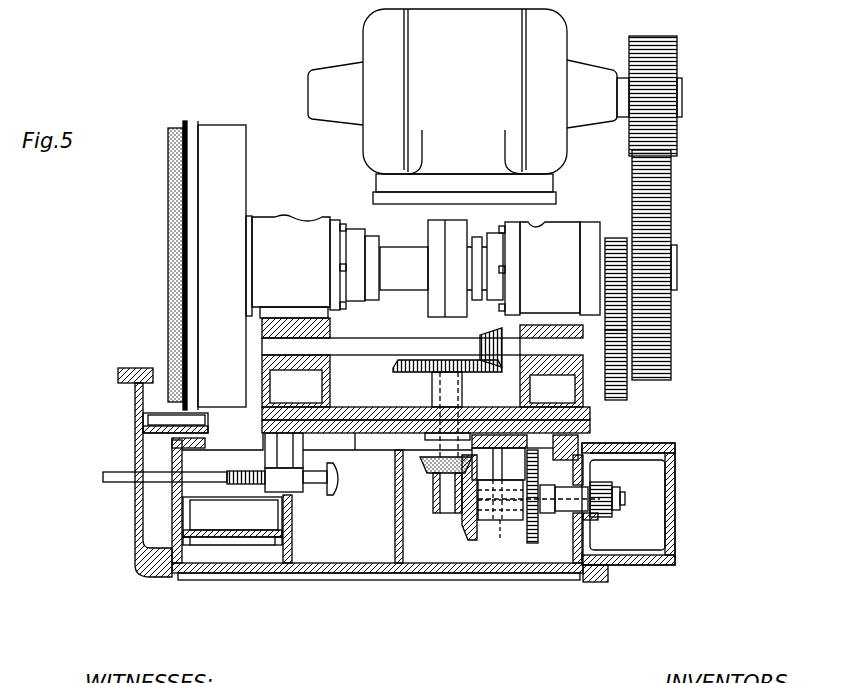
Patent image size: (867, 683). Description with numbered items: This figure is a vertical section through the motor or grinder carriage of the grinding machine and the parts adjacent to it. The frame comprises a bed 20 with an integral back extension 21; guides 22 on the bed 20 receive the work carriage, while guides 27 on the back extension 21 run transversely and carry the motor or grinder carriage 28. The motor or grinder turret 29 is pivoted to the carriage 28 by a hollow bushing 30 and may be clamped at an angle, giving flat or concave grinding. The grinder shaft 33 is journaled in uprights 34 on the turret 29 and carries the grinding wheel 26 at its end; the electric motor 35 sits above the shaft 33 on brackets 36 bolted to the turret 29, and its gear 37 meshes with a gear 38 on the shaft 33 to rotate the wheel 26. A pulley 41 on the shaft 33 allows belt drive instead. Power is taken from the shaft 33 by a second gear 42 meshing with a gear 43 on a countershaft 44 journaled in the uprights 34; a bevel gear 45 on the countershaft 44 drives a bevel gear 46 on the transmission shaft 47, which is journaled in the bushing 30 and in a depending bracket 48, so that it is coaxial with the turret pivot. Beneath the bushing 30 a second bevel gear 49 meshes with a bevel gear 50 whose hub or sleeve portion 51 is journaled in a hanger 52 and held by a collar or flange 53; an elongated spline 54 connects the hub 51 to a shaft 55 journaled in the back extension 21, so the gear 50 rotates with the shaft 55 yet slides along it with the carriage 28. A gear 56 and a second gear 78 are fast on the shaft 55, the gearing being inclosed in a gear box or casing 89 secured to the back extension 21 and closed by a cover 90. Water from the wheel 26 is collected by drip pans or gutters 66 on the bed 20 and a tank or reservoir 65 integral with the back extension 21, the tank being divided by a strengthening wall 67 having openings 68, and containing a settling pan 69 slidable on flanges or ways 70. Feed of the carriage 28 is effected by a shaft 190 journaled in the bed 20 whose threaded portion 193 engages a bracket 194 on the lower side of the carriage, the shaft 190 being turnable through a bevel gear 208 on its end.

The bed 20 is at (135, 420).
The back extension 21 is at (350, 573).
The guides 22 is at (136, 368).
The grinding wheel 26 is at (178, 218).
The guides 27 is at (357, 435).
The motor or grinder carriage 28 is at (590, 428).
The motor or grinder turret 29 is at (590, 412).
The hollow bushing 30 is at (440, 395).
The grinder shaft 33 is at (405, 265).
The uprights 34 is at (300, 240).
The electric motor 35 is at (468, 91).
The brackets 36 is at (400, 212).
The gear 37 is at (657, 50).
The gear 38 is at (662, 208).
The pulley 41 is at (450, 228).
The second gear 42 is at (612, 235).
The gear 43 is at (630, 392).
The countershaft 44 is at (357, 348).
The bevel gear 45 is at (487, 340).
The bevel gear 46 is at (420, 360).
The transmission shaft 47 is at (440, 390).
The bracket 48 is at (437, 513).
The second bevel gear 49 is at (425, 475).
The bevel gear 50 is at (470, 533).
The hub or sleeve portion 51 is at (490, 520).
The hanger or bracket 52 is at (505, 520).
The collar or flange 53 is at (525, 525).
The spline or feather 54 is at (520, 520).
The shaft 55 is at (562, 487).
The gear 56 is at (548, 545).
The tank or reservoir 65 is at (282, 532).
The drip pans or gutters 66 is at (140, 435).
The wall 67 is at (300, 572).
The openings 68 is at (292, 553).
The mud or settling pan or trap 69 is at (225, 572).
The flanges or ways 70 is at (205, 570).
The second gear 78 is at (603, 485).
The gear box or casing 89 is at (675, 553).
The cover 90 is at (677, 445).
The shaft 190 is at (125, 477).
The threaded portion 193 is at (248, 487).
The bracket 194 is at (295, 487).
The bevel gear 208 is at (337, 573).